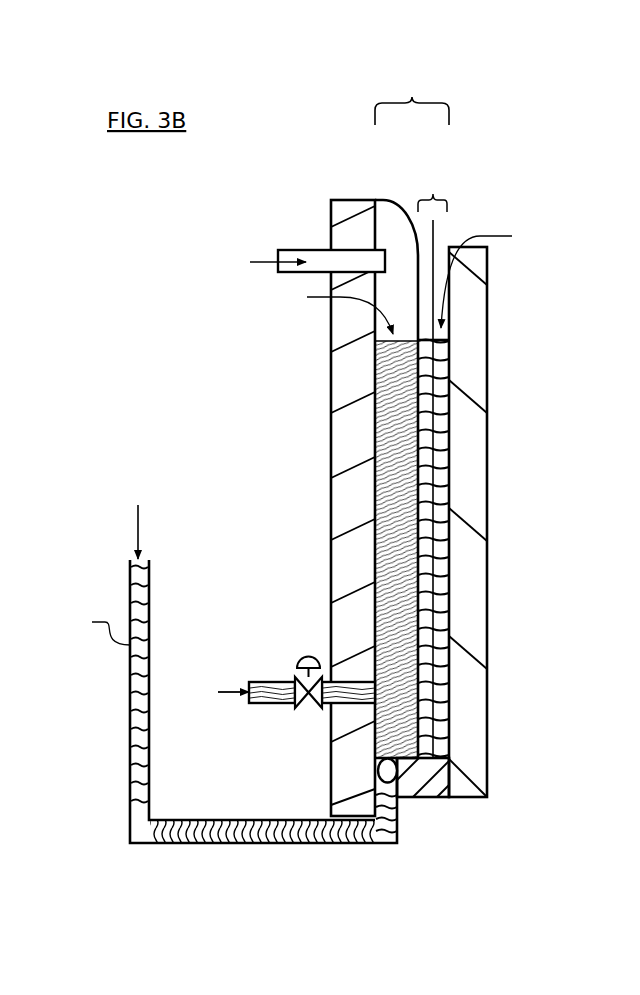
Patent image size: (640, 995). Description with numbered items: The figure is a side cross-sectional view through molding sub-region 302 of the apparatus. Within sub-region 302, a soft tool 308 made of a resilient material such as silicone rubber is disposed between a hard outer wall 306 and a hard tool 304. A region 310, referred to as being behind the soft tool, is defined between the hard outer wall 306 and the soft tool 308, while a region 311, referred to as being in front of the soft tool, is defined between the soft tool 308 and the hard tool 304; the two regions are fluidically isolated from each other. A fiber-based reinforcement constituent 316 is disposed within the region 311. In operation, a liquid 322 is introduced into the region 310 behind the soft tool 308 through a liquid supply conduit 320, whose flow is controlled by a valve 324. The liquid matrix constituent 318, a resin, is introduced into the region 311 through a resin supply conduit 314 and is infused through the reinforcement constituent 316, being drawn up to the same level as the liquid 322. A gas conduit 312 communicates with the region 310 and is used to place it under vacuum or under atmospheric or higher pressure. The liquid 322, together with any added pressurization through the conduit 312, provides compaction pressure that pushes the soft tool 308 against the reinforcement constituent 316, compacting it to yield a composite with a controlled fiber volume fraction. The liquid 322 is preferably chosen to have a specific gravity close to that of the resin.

The molding sub-region 302 is at (412, 93).
The hard tool 304 is at (473, 683).
The hard outer wall 306 is at (352, 505).
The soft tool 308 is at (390, 198).
The region behind the soft tool 310 is at (394, 437).
The region in front of the soft tool 311 is at (433, 192).
The gas conduit 312 is at (312, 250).
The resin supply conduit 314 is at (265, 845).
The reinforcement constituent 316 is at (433, 237).
The matrix constituent 318 is at (440, 493).
The liquid supply conduit 320 is at (283, 681).
The liquid 322 is at (210, 694).
The valve 324 is at (302, 652).